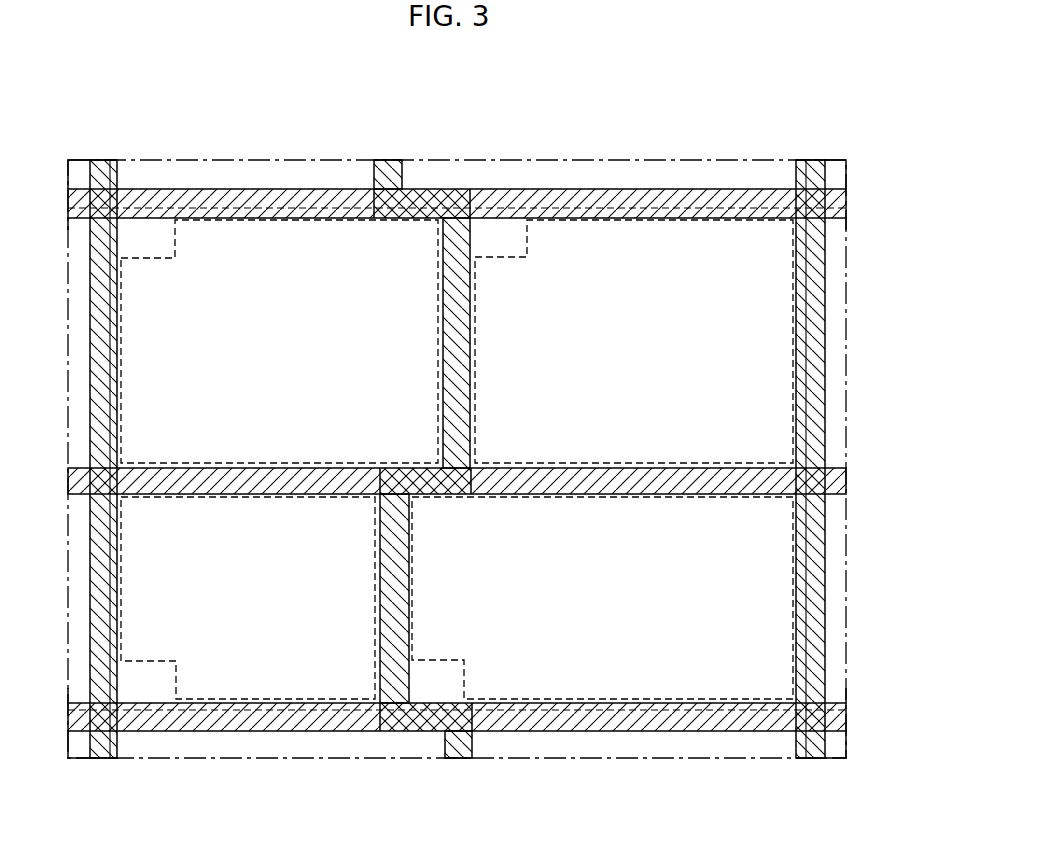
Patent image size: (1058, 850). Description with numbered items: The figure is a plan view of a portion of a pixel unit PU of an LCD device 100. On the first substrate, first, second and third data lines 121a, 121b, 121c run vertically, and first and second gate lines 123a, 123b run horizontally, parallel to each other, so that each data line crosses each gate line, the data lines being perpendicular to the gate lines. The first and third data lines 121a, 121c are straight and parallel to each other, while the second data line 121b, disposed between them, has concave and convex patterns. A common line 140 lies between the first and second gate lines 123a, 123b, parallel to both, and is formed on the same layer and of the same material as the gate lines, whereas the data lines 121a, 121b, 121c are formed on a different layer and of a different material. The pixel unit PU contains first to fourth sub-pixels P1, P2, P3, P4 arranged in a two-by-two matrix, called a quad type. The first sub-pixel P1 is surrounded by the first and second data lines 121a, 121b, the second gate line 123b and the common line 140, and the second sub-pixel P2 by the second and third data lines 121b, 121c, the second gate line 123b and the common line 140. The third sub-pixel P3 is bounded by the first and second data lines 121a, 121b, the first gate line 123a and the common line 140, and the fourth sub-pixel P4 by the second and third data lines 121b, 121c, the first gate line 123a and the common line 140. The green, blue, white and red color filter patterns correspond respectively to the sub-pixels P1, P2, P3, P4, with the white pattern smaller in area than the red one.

The LCD device 100 is at (780, 108).
The pixel unit PU is at (142, 203).
The first sub-pixel P1 is at (246, 214).
The second sub-pixel P2 is at (590, 212).
The third sub-pixel P3 is at (278, 706).
The fourth sub-pixel P4 is at (668, 706).
The first data line 121a is at (104, 740).
The second data line 121b is at (392, 738).
The third data line 121c is at (818, 740).
The first gate line 123a is at (847, 708).
The second gate line 123b is at (840, 198).
The common line 140 is at (846, 478).